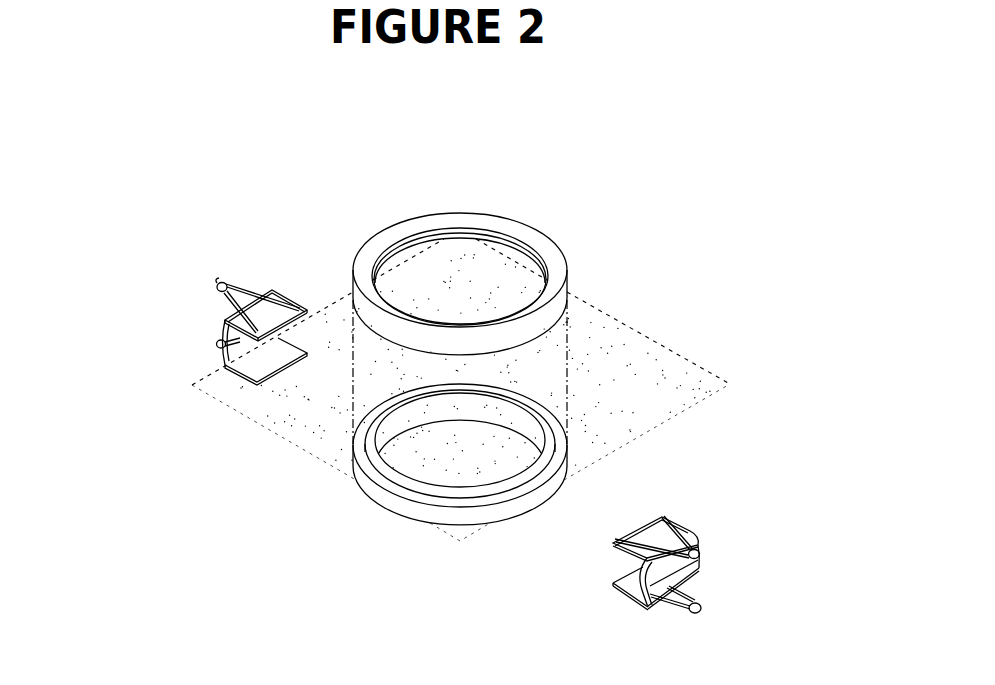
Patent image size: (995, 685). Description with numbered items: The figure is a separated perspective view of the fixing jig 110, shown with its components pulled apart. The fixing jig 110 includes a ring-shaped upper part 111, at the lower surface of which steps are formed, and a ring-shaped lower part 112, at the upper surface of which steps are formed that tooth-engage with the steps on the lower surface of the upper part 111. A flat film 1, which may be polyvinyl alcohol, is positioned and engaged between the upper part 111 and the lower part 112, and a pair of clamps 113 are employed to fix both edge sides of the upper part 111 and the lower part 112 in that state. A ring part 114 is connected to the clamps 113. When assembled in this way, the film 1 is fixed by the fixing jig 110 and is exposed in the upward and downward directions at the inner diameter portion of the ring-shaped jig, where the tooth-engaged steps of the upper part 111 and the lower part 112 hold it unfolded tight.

The film 1 is at (630, 328).
The fixing jig 110 is at (256, 133).
The upper part 111 is at (491, 214).
The lower part 112 is at (414, 522).
The clamps 113 is at (683, 516).
The ring part 114 is at (214, 282).